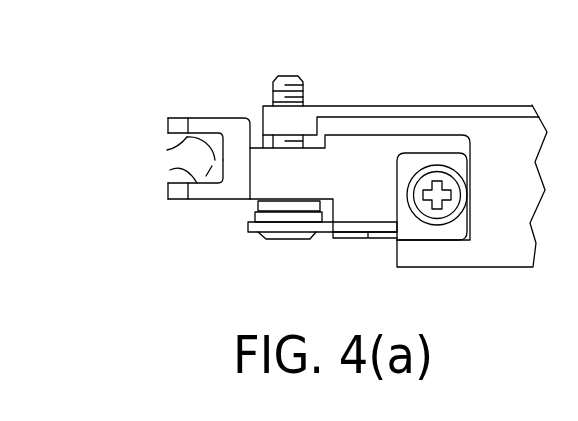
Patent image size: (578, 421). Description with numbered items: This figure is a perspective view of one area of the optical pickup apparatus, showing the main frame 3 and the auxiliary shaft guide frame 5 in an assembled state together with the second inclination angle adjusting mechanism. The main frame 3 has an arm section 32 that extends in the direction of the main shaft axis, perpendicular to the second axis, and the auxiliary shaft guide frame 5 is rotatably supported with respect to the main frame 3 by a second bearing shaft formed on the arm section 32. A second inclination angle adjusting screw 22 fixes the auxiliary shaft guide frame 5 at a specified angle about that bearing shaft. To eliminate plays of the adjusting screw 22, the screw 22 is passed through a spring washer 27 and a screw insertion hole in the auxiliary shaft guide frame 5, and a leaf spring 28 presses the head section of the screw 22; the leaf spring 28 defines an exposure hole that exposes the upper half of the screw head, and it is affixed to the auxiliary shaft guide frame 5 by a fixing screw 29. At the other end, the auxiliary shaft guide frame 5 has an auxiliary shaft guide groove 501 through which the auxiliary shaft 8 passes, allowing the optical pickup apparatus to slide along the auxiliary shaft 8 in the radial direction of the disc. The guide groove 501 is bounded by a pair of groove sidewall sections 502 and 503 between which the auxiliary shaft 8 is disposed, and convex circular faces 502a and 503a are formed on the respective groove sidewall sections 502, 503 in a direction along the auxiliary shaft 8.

The main frame 3 is at (474, 254).
The auxiliary shaft guide frame 5 is at (372, 155).
The auxiliary shaft 8 is at (167, 150).
The second inclination angle adjusting screw 22 is at (305, 88).
The spring washer 27 is at (250, 205).
The leaf spring 28 is at (321, 226).
The fixing screw 29 is at (352, 238).
The arm section 32 is at (282, 123).
The auxiliary shaft guide groove 501 is at (223, 163).
The groove sidewall section 502 is at (199, 118).
The convex circular face 502a is at (173, 145).
The groove sidewall section 503 is at (197, 184).
The convex circular face 503a is at (170, 170).